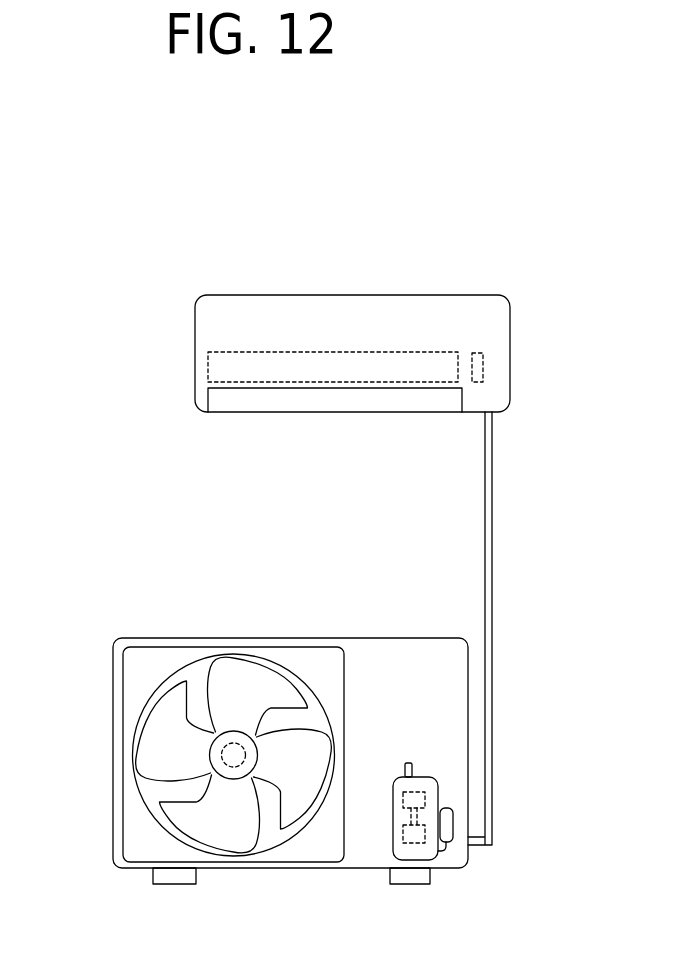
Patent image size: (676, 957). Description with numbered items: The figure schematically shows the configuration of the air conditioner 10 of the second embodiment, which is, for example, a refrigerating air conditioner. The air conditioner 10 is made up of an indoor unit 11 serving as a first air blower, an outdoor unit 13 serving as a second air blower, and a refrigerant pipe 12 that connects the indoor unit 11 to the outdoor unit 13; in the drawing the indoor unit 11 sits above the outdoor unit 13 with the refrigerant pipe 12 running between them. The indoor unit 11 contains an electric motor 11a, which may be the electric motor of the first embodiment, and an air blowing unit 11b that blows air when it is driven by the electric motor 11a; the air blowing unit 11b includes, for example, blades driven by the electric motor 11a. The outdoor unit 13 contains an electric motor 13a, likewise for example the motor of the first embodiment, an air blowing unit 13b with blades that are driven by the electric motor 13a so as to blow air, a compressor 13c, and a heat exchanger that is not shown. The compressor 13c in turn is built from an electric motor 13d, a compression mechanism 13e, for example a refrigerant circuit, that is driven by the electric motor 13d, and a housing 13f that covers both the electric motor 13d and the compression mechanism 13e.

The air conditioner 10 is at (70, 250).
The indoor unit 11 is at (345, 295).
The electric motor 11a is at (483, 367).
The air blowing unit 11b is at (208, 366).
The refrigerant pipe 12 is at (495, 550).
The outdoor unit 13 is at (285, 638).
The electric motor 13a is at (233, 768).
The air blowing unit 13b is at (167, 753).
The compressor 13c is at (389, 758).
The electric motor 13d is at (414, 795).
The compression mechanism 13e is at (415, 840).
The housing 13f is at (393, 845).